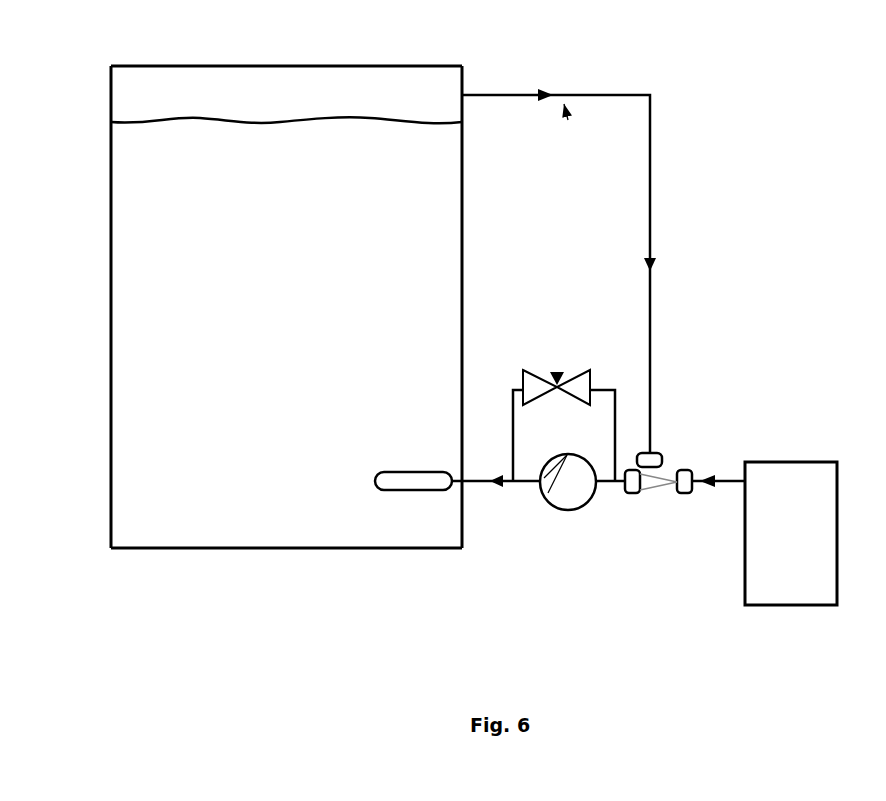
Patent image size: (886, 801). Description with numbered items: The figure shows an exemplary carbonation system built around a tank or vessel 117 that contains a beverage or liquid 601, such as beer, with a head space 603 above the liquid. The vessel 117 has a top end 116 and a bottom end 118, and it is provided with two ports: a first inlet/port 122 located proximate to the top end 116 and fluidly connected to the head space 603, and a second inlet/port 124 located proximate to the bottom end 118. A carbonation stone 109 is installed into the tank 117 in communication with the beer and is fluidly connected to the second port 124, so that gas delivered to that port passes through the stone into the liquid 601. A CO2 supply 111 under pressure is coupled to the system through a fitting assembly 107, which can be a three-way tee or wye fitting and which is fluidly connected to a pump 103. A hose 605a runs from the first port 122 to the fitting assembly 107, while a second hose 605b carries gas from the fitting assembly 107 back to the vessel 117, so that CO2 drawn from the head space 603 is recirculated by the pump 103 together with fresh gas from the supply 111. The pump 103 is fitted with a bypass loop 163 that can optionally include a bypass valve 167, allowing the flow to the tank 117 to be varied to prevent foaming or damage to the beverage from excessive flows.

The top end 116 is at (109, 100).
The tank or vessel 117 is at (109, 265).
The bottom end 118 is at (146, 551).
The beverage or liquid 601 is at (286, 162).
The head space 603 is at (269, 93).
The first inlet/port 122 is at (466, 88).
The hose 605a is at (654, 333).
The second inlet/port 124 is at (465, 490).
The carbonation stone 109 is at (370, 462).
The pump 103 is at (570, 516).
The bypass loop 163 is at (601, 385).
The bypass valve 167 is at (558, 366).
The second hose 605b is at (612, 488).
The fitting assembly 107 is at (673, 452).
The CO2 supply 111 is at (791, 533).